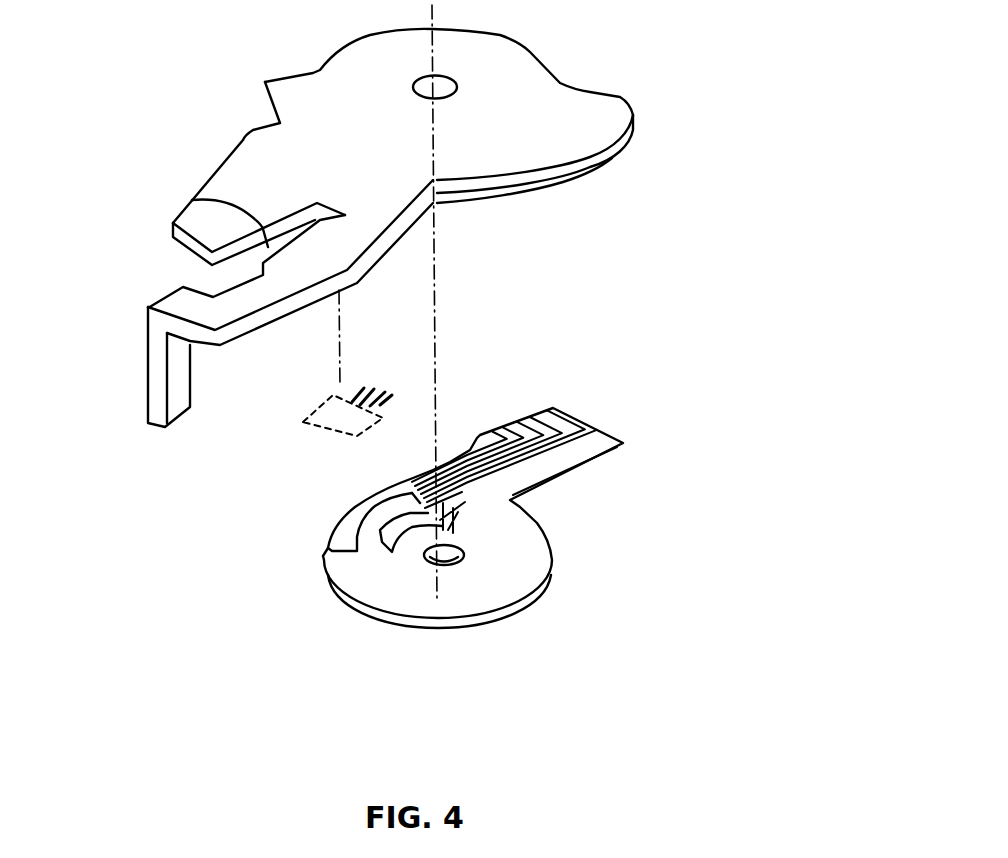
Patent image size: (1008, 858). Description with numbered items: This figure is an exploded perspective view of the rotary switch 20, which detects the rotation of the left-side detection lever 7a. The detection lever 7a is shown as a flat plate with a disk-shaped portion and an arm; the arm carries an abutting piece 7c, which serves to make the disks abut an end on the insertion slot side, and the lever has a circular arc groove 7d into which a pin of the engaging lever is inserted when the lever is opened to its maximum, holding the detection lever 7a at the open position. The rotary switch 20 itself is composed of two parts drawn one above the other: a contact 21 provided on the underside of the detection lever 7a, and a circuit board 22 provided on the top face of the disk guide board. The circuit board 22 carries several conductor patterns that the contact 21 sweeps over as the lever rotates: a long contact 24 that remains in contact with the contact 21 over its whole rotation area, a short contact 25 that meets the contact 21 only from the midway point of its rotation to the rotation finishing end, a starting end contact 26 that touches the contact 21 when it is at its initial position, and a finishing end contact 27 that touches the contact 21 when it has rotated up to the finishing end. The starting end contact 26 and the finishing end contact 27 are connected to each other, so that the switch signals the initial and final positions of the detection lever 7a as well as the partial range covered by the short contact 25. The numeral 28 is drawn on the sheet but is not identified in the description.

The detection lever 7a is at (517, 77).
The abutting piece 7c is at (158, 387).
The circular arc groove 7d is at (192, 200).
The rotary switch 20 is at (719, 203).
The contact 21 is at (327, 430).
The circuit board 22 is at (552, 546).
The long contact 24 is at (467, 541).
The short contact 25 is at (407, 518).
The starting end contact 26 is at (328, 550).
The finishing end contact 27 is at (402, 493).
The inner arcuate contact 28 is at (380, 533).